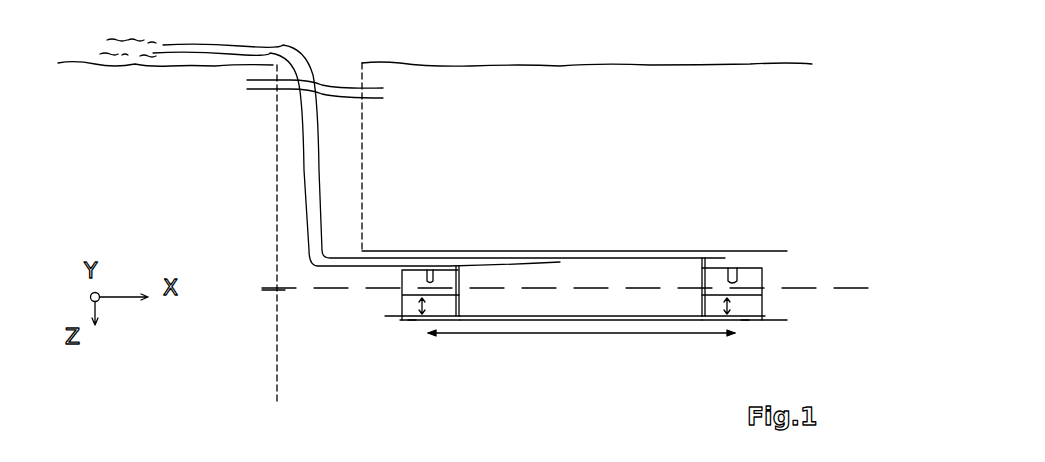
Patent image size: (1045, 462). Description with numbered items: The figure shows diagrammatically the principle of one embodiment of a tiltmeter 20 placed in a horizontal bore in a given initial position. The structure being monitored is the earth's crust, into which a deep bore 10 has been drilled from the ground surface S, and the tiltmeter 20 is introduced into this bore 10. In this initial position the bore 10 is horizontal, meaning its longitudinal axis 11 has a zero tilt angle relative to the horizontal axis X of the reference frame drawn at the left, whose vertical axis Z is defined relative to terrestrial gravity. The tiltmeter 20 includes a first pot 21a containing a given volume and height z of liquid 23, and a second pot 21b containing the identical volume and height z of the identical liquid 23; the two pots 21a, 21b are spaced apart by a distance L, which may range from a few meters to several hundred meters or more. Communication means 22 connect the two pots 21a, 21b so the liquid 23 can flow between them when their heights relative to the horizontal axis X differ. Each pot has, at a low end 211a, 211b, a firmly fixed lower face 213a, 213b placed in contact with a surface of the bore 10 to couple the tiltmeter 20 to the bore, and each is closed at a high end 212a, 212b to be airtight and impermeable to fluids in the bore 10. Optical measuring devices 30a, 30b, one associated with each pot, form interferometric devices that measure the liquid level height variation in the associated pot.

The bore 10 is at (642, 270).
The longitudinal axis 11 is at (800, 288).
The tiltmeter 20 is at (586, 278).
The first pot 21a is at (400, 317).
The second pot 21b is at (766, 306).
The communication means 22 is at (578, 323).
The liquid 23 is at (453, 268).
The optical measuring device 30a is at (552, 248).
The optical measuring device 30b is at (732, 268).
The low end 211a is at (400, 321).
The low end 211b is at (770, 323).
The high end 212a is at (460, 265).
The high end 212b is at (773, 256).
The lower face 213a is at (412, 318).
The lower face 213b is at (745, 320).
The ground surface S is at (627, 62).